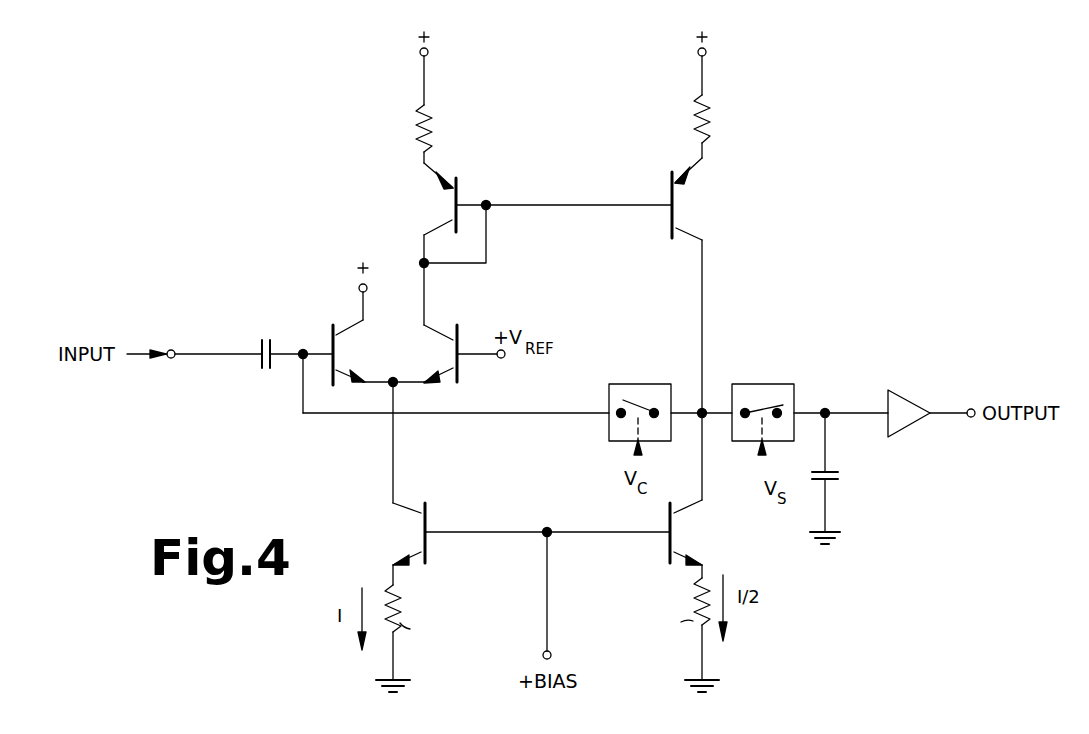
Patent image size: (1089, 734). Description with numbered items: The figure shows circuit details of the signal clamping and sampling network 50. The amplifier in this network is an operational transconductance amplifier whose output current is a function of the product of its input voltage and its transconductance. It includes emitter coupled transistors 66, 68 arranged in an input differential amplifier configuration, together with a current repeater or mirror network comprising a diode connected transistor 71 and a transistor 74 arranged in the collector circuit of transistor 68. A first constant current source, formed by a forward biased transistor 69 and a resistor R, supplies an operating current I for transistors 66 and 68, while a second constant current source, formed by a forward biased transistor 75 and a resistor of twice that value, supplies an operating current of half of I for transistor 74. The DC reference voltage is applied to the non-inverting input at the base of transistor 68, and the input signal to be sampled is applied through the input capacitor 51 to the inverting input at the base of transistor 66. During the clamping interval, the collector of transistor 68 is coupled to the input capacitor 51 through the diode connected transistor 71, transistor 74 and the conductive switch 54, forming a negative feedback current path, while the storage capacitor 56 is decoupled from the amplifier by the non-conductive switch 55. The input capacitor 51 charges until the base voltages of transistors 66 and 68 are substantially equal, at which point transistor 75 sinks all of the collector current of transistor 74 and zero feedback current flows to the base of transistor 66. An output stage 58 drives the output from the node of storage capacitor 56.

The signal clamping and sampling network 50 is at (917, 218).
The input capacitor 51 is at (271, 341).
The switch 54 is at (655, 384).
The switch 55 is at (784, 384).
The storage capacitor 56 is at (830, 481).
The output buffer amplifier 58 is at (903, 395).
The transistor 66 is at (372, 366).
The transistor 68 is at (442, 368).
The transistor 69 is at (409, 545).
The diode connected transistor 71 is at (431, 220).
The transistor 74 is at (713, 220).
The transistor 75 is at (714, 545).